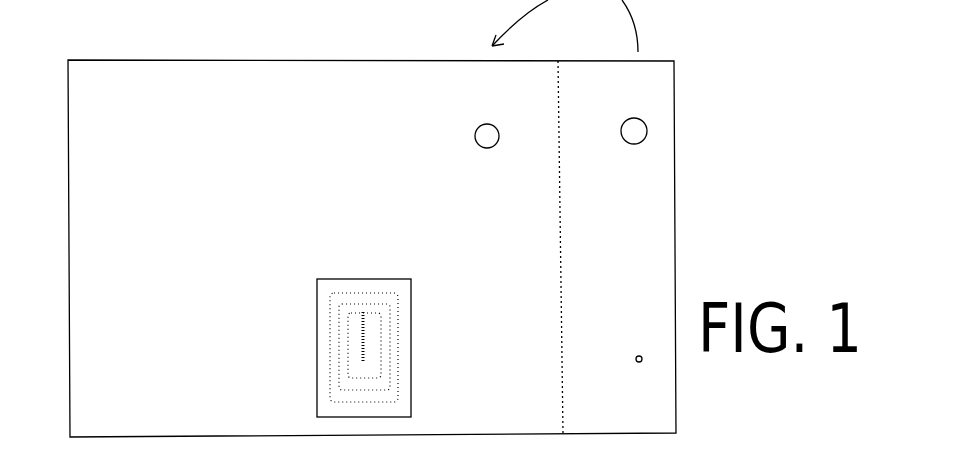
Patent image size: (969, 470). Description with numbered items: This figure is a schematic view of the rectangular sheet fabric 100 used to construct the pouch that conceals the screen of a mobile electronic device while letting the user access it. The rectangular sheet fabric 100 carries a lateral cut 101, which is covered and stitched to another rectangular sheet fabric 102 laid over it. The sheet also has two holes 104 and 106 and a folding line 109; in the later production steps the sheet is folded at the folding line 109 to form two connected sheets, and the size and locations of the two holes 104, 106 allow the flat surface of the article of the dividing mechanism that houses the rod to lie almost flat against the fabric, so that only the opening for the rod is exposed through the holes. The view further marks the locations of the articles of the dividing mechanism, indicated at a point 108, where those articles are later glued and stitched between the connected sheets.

The rectangular sheet fabric 100 is at (204, 150).
The lateral cut 101 is at (363, 345).
The rectangular sheet fabric 102 is at (402, 290).
The hole 104 is at (492, 149).
The hole 106 is at (632, 137).
The control point 108 is at (637, 356).
The folding line 109 is at (563, 140).